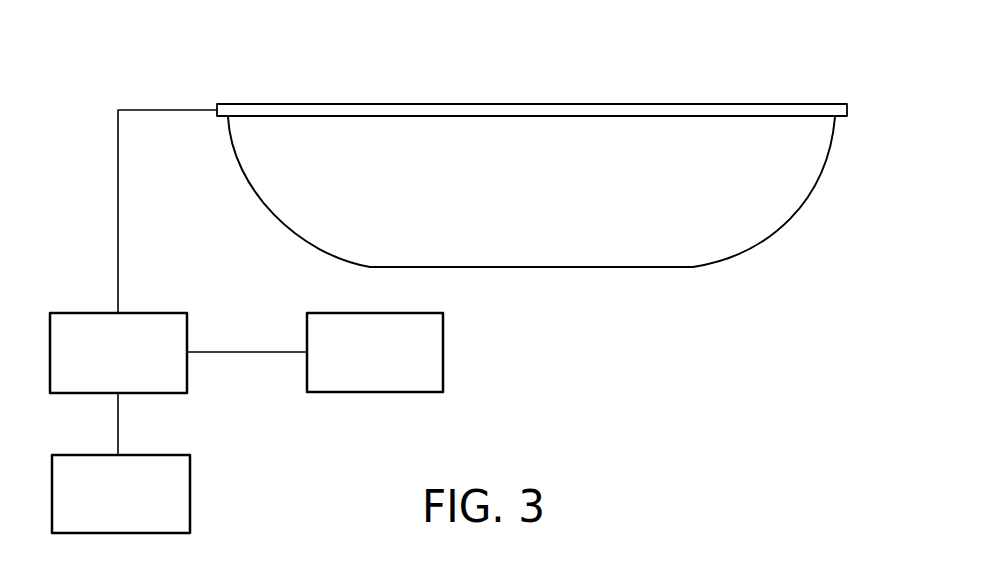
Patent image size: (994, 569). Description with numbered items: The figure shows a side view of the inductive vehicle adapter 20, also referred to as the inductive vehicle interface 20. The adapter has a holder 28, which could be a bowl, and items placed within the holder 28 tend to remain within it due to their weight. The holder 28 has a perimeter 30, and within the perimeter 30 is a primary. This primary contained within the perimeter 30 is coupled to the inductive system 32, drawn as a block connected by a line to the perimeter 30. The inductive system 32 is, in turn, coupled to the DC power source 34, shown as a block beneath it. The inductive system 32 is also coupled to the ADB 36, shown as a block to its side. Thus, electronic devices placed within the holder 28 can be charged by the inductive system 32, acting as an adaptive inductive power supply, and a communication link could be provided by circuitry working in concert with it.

The inductive vehicle adapter 20 is at (533, 140).
The holder 28 is at (778, 223).
The perimeter 30 is at (218, 104).
The inductive system 32 is at (63, 313).
The DC power source 34 is at (190, 495).
The ADB 36 is at (443, 352).